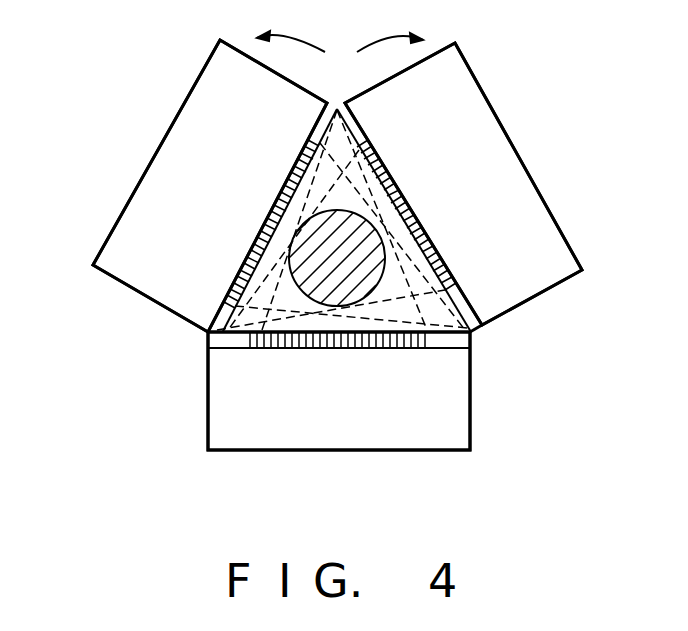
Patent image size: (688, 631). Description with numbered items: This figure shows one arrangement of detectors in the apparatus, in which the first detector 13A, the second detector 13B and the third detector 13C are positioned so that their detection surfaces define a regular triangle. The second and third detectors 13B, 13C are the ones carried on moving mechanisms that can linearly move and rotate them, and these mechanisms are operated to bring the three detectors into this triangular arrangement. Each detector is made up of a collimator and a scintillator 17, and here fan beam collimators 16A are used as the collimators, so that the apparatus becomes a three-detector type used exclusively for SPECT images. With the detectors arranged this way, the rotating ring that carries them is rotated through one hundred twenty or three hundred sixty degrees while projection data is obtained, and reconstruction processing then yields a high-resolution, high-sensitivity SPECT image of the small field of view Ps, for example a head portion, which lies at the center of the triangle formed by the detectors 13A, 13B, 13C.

The first detector 13A is at (390, 452).
The second detector 13B is at (546, 203).
The third detector 13C is at (134, 192).
The fan beam collimator 16A is at (300, 143).
The scintillator 17 is at (168, 153).
The small field of view Ps is at (303, 273).